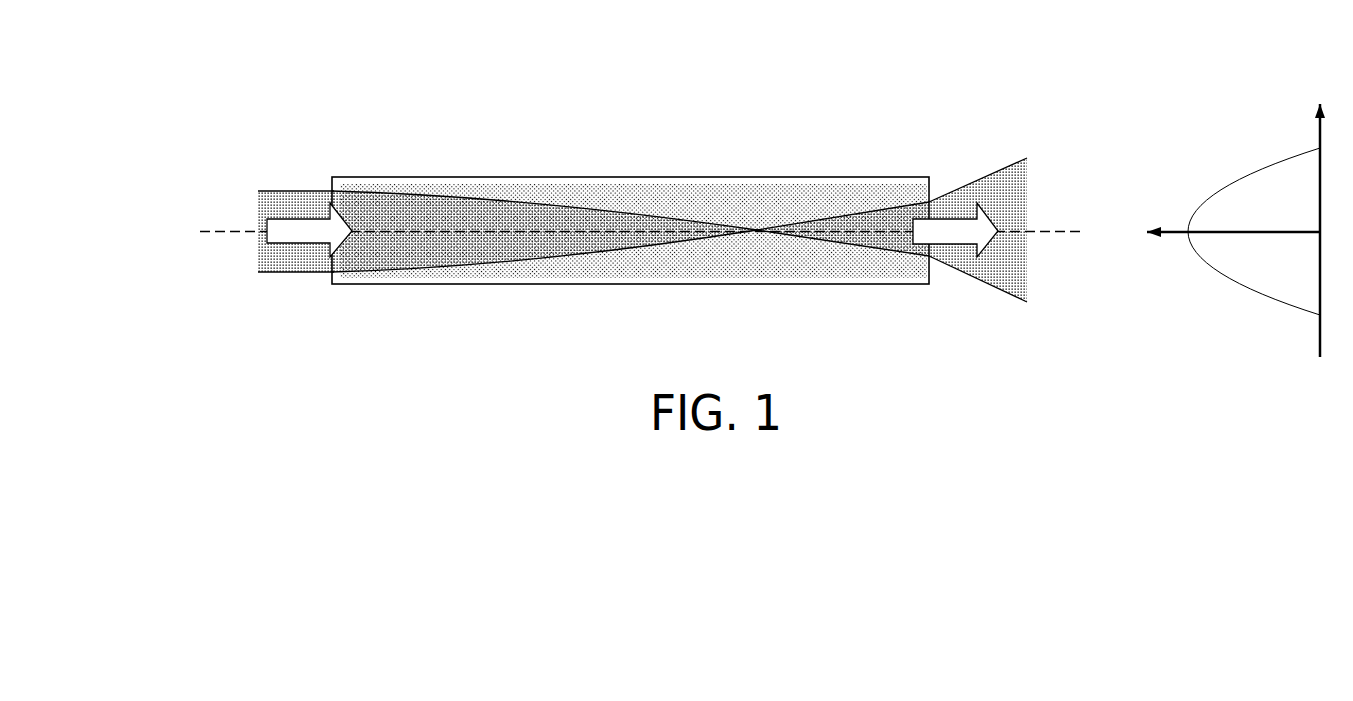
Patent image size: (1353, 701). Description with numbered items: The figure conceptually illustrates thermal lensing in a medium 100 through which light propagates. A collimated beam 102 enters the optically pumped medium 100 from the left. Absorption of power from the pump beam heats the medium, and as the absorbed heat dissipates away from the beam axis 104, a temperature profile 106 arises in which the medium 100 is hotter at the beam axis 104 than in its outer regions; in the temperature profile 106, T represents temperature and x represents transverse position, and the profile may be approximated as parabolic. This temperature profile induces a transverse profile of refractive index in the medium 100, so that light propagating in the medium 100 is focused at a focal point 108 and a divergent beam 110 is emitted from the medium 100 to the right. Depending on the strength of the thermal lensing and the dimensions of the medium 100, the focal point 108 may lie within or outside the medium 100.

The medium 100 is at (498, 178).
The collimated beam 102 is at (278, 202).
The beam axis 104 is at (212, 236).
The temperature profile 106 is at (1295, 308).
The focal point 108 is at (757, 229).
The divergent beam 110 is at (998, 172).